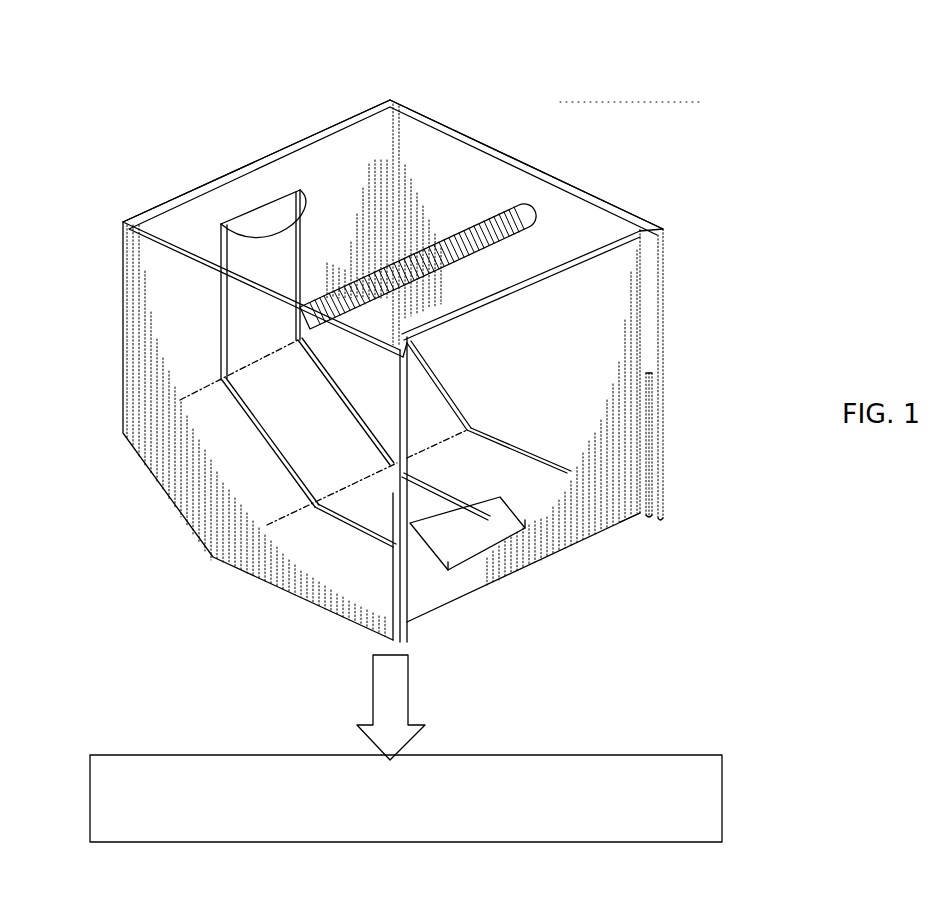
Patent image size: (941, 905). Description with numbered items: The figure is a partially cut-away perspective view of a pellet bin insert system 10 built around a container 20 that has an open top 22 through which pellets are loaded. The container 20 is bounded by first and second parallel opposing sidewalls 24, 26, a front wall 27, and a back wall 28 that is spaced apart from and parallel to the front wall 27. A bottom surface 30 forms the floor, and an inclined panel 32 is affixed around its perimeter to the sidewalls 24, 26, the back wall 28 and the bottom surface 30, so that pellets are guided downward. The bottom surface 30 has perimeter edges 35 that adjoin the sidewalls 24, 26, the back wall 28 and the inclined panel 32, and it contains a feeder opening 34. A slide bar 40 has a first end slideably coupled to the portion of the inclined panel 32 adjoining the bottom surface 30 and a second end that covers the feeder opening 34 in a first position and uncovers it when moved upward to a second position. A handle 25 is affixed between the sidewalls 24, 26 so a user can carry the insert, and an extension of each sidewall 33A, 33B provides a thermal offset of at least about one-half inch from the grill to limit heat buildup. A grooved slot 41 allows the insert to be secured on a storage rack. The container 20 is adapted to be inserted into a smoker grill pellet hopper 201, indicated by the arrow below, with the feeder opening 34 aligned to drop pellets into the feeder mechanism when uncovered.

The pellet bin insert system 10 is at (528, 393).
The container 20 is at (414, 110).
The open top 22 is at (407, 163).
The first sidewall 24 is at (583, 197).
The handle 25 is at (507, 207).
The second sidewall 26 is at (228, 430).
The front wall 27 is at (240, 168).
The back wall 28 is at (613, 247).
The bottom surface 30 is at (403, 477).
The inclined panel 32 is at (420, 397).
The sidewall extension 33A is at (663, 337).
The sidewall extension 33B is at (418, 351).
The feeder opening 34 is at (420, 528).
The perimeter edges 35 is at (507, 437).
The slide bar 40 is at (223, 233).
The grooved slot 41 is at (640, 513).
The smoker grill pellet hopper 201 is at (406, 798).